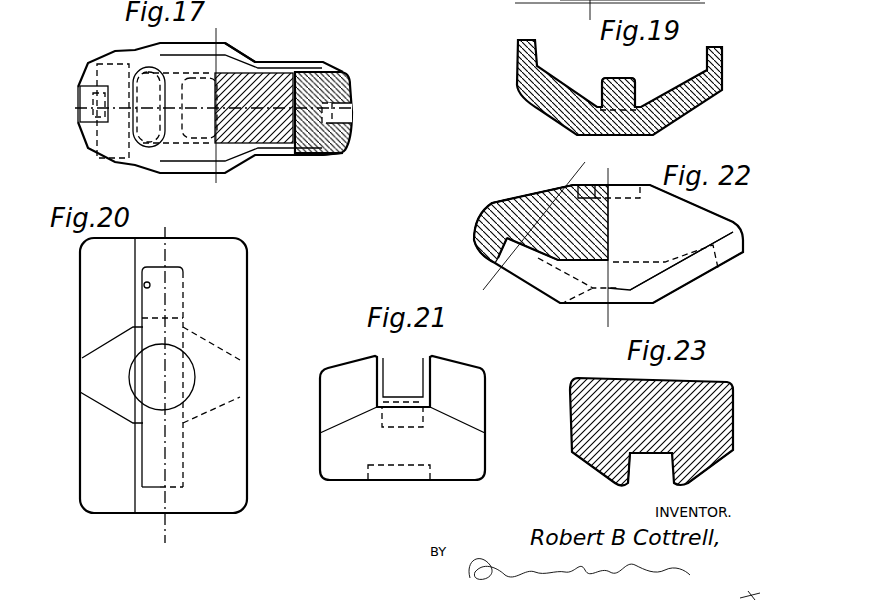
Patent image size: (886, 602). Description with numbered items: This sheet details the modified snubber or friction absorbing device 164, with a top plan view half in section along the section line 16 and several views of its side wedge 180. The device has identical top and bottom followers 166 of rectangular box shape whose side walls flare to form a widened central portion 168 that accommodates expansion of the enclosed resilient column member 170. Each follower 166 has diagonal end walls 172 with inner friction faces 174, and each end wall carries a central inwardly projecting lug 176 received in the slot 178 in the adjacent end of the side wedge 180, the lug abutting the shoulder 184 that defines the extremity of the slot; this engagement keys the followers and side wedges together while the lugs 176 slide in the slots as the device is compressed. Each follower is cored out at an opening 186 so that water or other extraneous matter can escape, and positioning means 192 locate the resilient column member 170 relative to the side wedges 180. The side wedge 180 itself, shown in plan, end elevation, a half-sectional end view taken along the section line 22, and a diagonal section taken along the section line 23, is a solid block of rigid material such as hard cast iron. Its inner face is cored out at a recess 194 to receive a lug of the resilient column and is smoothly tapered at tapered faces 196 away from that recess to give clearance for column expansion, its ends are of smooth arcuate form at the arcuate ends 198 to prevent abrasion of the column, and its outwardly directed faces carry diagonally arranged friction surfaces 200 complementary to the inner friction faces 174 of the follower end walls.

In FIG. 17, the section line 16- 16 is at (60, 119).
In FIG. 20, the section line 22— 22 is at (147, 377).
In FIG. 22, the section line 23— 23 is at (556, 167).
In FIG. 17, the friction absorbing device 164 is at (100, 162).
In FIG. 17, the follower 166 is at (277, 60).
In FIG. 17, the widened central portion 168 is at (240, 50).
In FIG. 17, the resilient column member 170 is at (150, 78).
In FIG. 19, the diagonal end wall 172 is at (672, 118).
In FIG. 19, the inner friction face 174 is at (558, 83).
In FIG. 19, the lug 176 is at (615, 85).
In FIG. 17, the slot 178 is at (352, 113).
In FIG. 22, the slot 178 is at (540, 257).
In FIG. 20, the slot 178 is at (145, 286).
In FIG. 21, the slot 178 is at (412, 397).
In FIG. 23, the slot 178 is at (650, 460).
In FIG. 17, the side wedge 180 is at (85, 63).
In FIG. 22, the side wedge 180 is at (479, 226).
In FIG. 20, the side wedge 180 is at (247, 252).
In FIG. 21, the side wedge 180 is at (486, 462).
In FIG. 23, the side wedge 180 is at (725, 380).
In FIG. 22, the shoulder 184 is at (490, 247).
In FIG. 20, the shoulder 184 is at (167, 278).
In FIG. 17, the opening 186 is at (157, 127).
In FIG. 17, the positioning means 192 is at (327, 153).
In FIG. 22, the cored-out opening 194 is at (590, 185).
In FIG. 20, the cored-out opening 194 is at (180, 347).
In FIG. 21, the cored-out opening 194 is at (378, 470).
In FIG. 22, the tapered inner face 196 is at (533, 195).
In FIG. 22, the arcuate end 198 is at (488, 212).
In FIG. 22, the diagonal friction surface 200 is at (680, 285).
In FIG. 20, the diagonal friction surface 200 is at (98, 305).
In FIG. 21, the diagonal friction surface 200 is at (340, 378).
In FIG. 23, the diagonal friction surface 200 is at (586, 468).